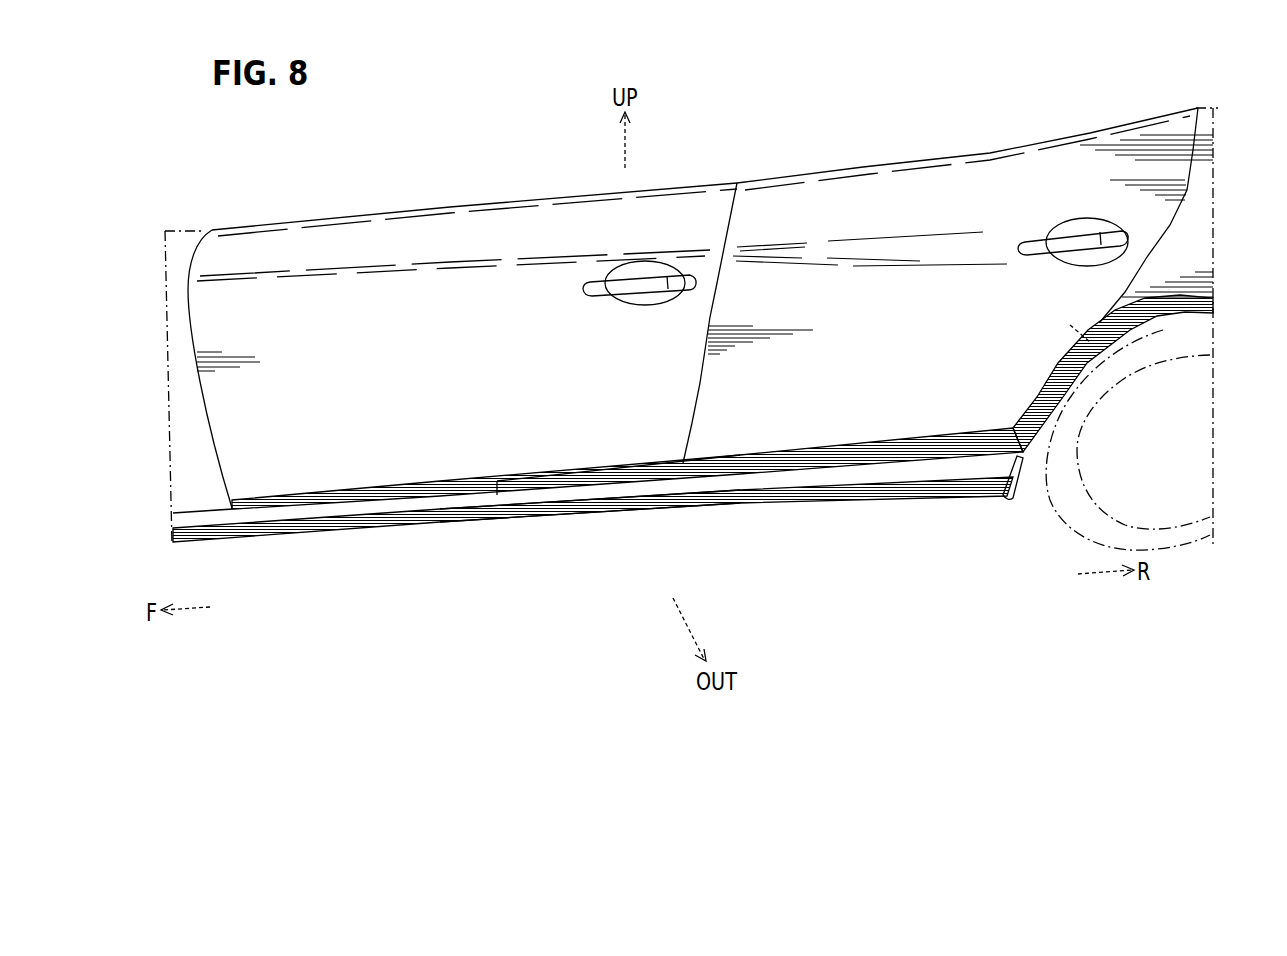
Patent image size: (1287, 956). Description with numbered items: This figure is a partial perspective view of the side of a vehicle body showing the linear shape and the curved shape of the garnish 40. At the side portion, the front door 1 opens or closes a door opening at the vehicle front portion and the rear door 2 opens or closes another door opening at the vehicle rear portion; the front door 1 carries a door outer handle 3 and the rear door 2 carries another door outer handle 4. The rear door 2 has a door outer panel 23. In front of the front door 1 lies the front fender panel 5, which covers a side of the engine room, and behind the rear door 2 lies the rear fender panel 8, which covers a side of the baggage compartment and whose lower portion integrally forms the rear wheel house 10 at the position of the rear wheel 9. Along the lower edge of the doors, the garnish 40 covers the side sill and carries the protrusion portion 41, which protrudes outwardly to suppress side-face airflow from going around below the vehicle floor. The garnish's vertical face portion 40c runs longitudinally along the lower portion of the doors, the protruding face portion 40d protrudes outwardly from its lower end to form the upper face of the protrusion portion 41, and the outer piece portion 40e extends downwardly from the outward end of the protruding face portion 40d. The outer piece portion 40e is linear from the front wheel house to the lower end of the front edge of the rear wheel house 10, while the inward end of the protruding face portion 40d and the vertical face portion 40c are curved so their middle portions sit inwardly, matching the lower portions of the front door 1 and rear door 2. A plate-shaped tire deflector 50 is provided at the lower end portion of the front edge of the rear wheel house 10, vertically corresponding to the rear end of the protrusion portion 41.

The front door 1 is at (428, 354).
The rear door 2 is at (907, 163).
The door outer handle 3 is at (640, 297).
The door outer handle 4 is at (1068, 248).
The front fender panel 5 is at (182, 247).
The rear fender panel 8 is at (1203, 219).
The rear wheel 9 is at (1070, 523).
The rear wheel house 10 is at (1158, 320).
The door outer panel 23 is at (897, 329).
The garnish 40 is at (495, 479).
The vertical face portion 40c is at (580, 496).
The protruding face portion 40d is at (545, 518).
The outer piece portion 40e is at (468, 523).
The protrusion portion 41 is at (762, 511).
The tire deflector 50 is at (1005, 502).